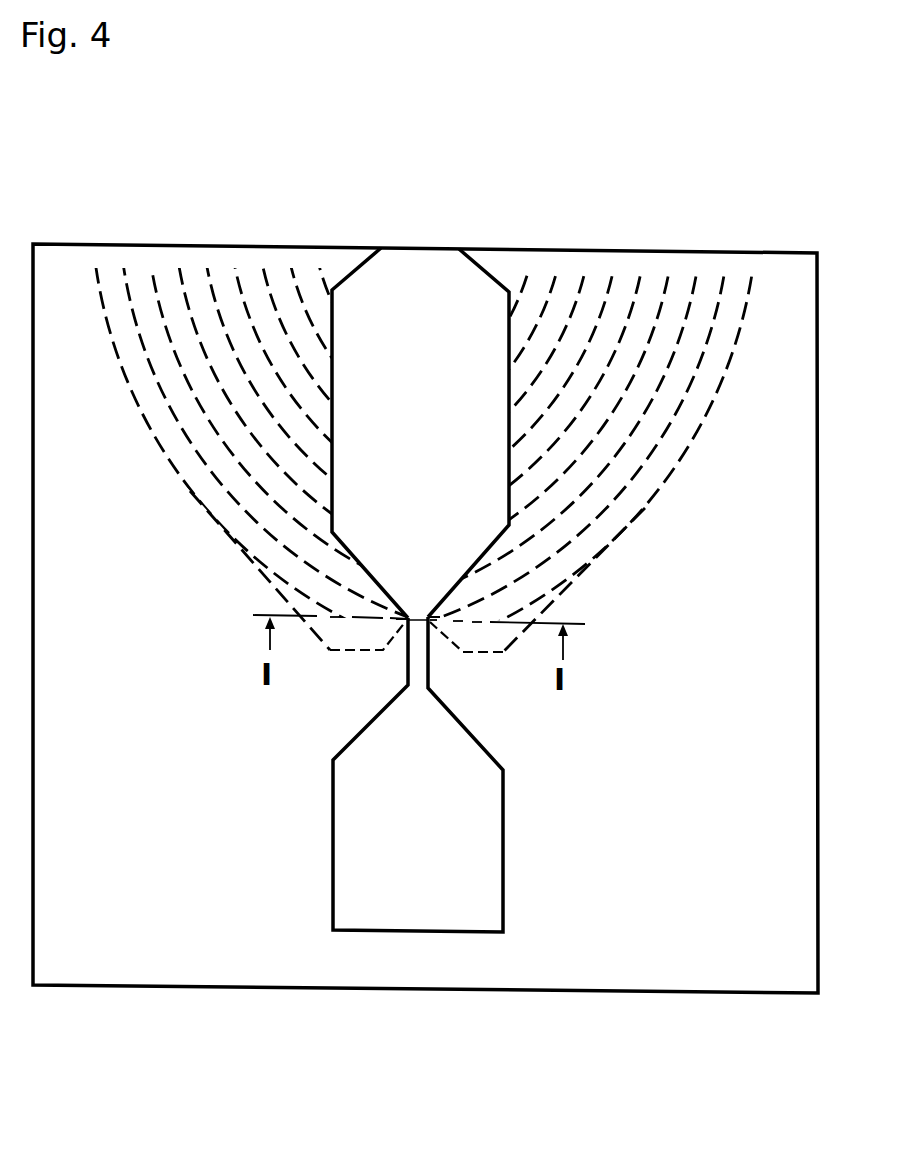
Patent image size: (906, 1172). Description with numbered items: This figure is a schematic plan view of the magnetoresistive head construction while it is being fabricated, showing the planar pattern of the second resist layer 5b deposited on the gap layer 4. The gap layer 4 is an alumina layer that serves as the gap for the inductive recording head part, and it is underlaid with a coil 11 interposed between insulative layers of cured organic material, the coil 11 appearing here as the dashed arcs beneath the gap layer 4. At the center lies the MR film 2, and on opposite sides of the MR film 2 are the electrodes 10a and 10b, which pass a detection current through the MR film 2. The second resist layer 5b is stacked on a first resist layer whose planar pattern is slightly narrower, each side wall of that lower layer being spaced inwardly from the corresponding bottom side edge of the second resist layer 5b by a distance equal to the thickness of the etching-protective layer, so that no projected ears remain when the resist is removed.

The gap layer 4 is at (798, 768).
The second resist layer 5b is at (485, 847).
The MR film 2 is at (404, 627).
The electrode 10a is at (347, 645).
The electrode 10b is at (503, 652).
The coil 11 is at (630, 512).